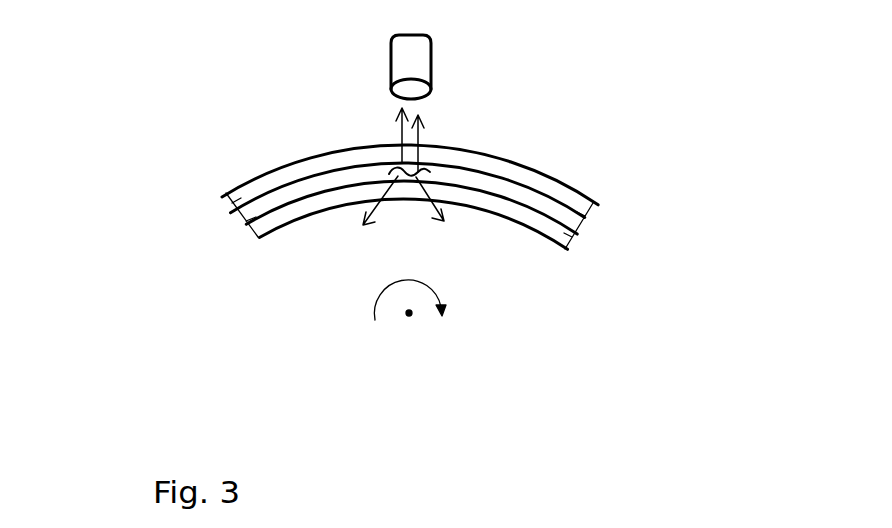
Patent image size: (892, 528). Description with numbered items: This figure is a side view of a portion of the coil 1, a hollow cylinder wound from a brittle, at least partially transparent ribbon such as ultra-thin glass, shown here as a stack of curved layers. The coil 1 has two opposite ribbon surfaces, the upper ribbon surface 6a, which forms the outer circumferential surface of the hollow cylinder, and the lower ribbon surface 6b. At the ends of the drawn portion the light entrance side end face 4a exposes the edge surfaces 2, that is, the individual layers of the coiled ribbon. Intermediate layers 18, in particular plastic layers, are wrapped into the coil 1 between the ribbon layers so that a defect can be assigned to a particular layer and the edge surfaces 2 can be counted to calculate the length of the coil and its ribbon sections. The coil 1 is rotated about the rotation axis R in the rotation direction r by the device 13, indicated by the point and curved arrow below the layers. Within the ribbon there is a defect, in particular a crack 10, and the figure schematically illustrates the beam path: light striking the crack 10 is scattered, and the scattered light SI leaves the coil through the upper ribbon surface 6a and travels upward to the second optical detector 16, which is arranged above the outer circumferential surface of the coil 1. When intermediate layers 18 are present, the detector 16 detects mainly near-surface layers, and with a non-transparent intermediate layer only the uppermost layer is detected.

The coil 1 is at (414, 215).
The edge surfaces 2 is at (240, 220).
The light entrance side end face 4a is at (242, 238).
The upper ribbon surface 6a is at (532, 164).
The lower ribbon surface 6b is at (537, 235).
The crack 10 is at (430, 172).
The device 13 is at (383, 292).
The second optical detector 16 is at (432, 57).
The intermediate layers 18 is at (583, 222).
The scattered light SI is at (392, 128).
The rotation direction r is at (418, 303).
The rotation axis R is at (412, 323).